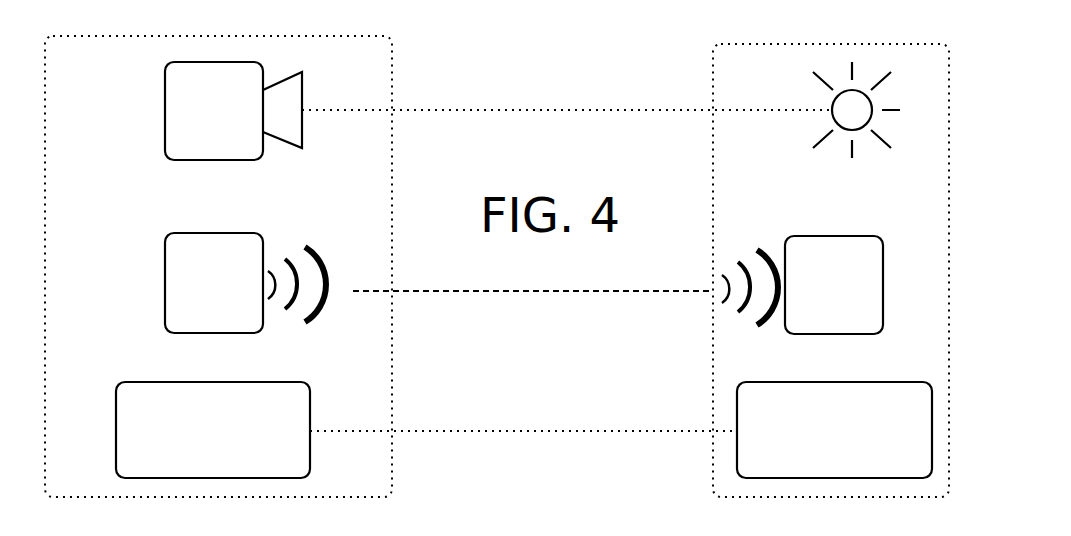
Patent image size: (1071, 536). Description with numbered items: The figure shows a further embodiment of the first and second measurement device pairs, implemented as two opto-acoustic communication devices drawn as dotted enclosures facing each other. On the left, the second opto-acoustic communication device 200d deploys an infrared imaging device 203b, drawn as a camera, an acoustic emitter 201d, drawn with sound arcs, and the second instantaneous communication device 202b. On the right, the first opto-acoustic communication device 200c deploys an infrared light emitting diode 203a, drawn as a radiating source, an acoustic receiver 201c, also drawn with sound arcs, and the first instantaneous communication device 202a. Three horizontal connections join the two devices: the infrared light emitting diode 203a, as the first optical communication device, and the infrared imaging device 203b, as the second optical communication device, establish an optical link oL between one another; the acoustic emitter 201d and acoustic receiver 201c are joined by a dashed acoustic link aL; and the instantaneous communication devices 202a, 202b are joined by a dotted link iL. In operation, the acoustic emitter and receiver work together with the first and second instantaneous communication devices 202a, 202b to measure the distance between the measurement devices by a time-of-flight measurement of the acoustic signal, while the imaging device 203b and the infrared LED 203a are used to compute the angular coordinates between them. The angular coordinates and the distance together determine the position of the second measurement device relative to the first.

The second opto-acoustic communication device 200d is at (393, 378).
The first opto-acoustic communication device 200c is at (712, 358).
The infrared imaging device 203b is at (165, 116).
The acoustic emitter 201d is at (250, 233).
The second instantaneous communication device 202b is at (225, 383).
The infrared light emitting diode 203a is at (830, 112).
The acoustic receiver 201c is at (863, 237).
The first instantaneous communication device 202a is at (862, 383).
The optical link oL is at (555, 110).
The acoustic link aL is at (487, 291).
The instantaneous communication link iL is at (552, 431).